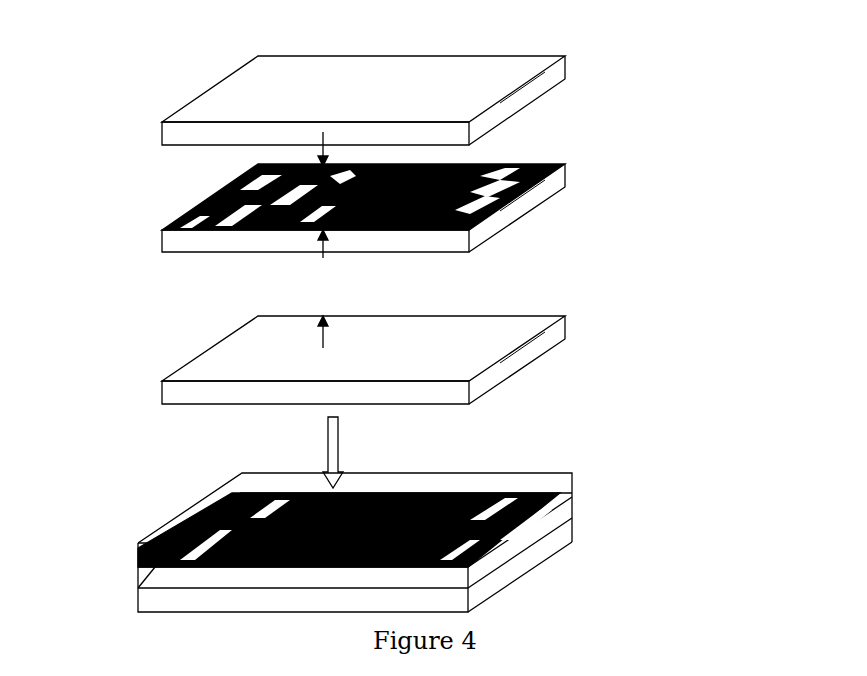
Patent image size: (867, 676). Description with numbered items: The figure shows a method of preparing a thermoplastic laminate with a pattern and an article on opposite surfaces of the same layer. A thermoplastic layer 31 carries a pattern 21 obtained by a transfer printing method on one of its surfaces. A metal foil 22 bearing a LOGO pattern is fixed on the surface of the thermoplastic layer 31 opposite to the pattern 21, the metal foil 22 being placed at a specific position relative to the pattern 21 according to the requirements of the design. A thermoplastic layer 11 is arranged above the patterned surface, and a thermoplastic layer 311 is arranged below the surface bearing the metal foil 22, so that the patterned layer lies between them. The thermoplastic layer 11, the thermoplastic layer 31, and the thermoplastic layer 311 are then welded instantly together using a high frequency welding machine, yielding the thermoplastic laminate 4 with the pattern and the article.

The thermoplastic layer 11 is at (567, 73).
The pattern 21 is at (528, 158).
The metal foil 22 is at (305, 264).
The thermoplastic layer 31 is at (471, 295).
The thermoplastic layer 311 is at (508, 360).
The thermoplastic laminate 4 is at (513, 535).